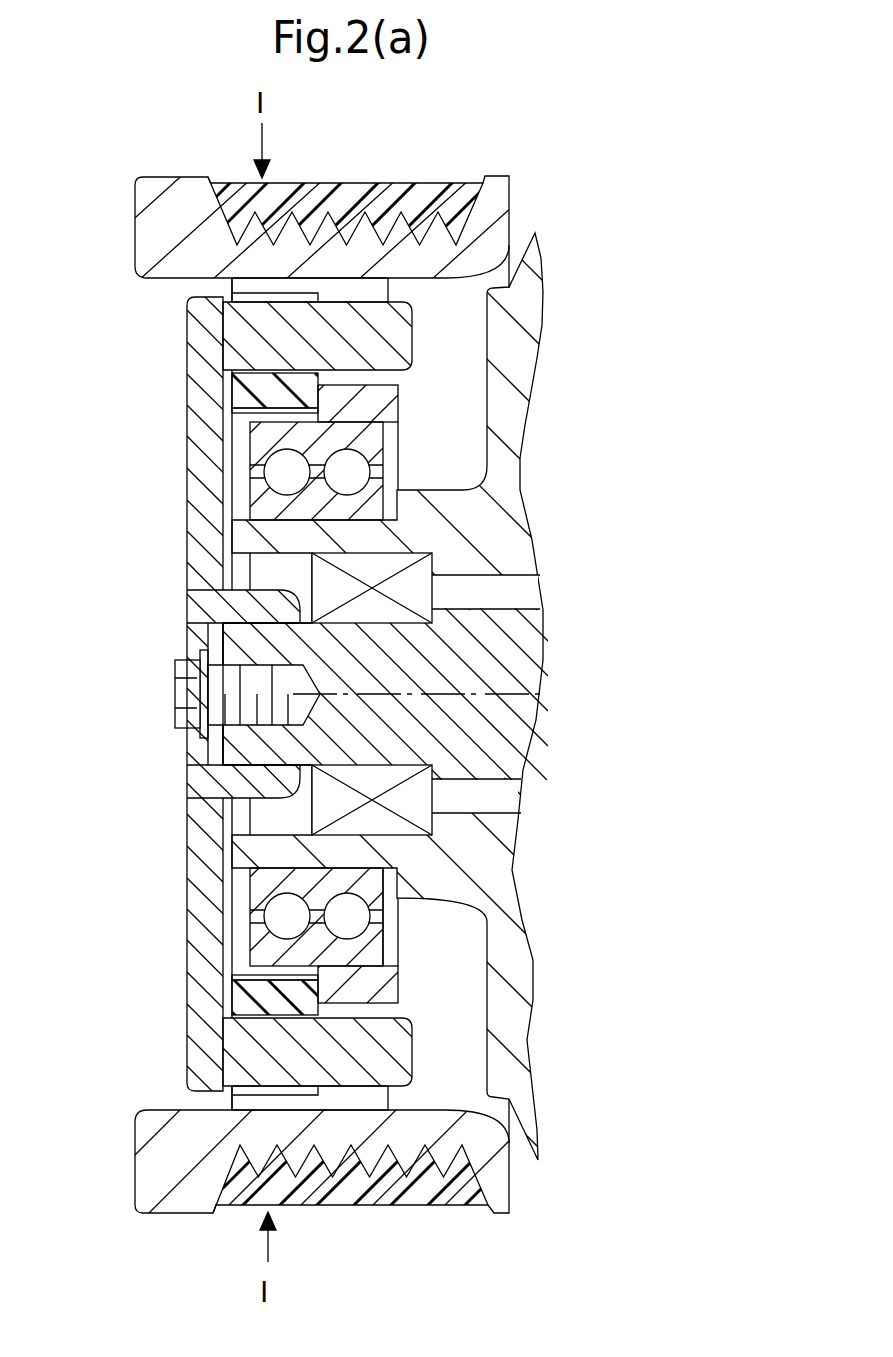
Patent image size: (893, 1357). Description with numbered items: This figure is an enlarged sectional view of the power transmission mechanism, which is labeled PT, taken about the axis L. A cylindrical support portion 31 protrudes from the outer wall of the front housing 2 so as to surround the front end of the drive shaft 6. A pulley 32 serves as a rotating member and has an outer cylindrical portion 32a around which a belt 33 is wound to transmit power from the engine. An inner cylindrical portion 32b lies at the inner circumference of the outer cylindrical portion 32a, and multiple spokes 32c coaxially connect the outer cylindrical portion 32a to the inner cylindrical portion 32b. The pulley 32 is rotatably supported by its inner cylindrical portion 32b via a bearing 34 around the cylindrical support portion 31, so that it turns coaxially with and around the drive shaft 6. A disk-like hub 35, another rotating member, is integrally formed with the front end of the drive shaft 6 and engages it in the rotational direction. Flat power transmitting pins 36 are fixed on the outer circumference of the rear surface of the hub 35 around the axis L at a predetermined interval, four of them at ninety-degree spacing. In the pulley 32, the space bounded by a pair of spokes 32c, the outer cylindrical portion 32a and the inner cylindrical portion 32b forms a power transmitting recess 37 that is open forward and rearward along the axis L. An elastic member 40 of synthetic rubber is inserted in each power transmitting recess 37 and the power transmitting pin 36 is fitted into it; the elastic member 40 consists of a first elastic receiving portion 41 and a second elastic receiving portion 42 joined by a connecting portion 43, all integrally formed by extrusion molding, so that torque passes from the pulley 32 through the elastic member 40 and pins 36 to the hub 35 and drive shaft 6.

The front housing 2 is at (512, 426).
The drive shaft 6 is at (532, 621).
The cylindrical support portion 31 is at (340, 535).
The pulley 32 is at (511, 181).
The outer cylindrical portion 32a is at (499, 207).
The inner cylindrical portion 32b is at (396, 983).
The spokes 32c is at (394, 293).
The belt 33 is at (303, 1206).
The bearing 34 is at (352, 915).
The hub 35 is at (187, 574).
The power transmitting pins 36 is at (412, 345).
The power transmitting recess 37 is at (398, 378).
The elastic member 40 is at (247, 385).
The first elastic receiving portion 41 is at (232, 286).
The second elastic receiving portion 42 is at (235, 1093).
The connecting portion 43 is at (248, 370).
The pulley tensioner PT is at (137, 179).
The axis L is at (548, 691).